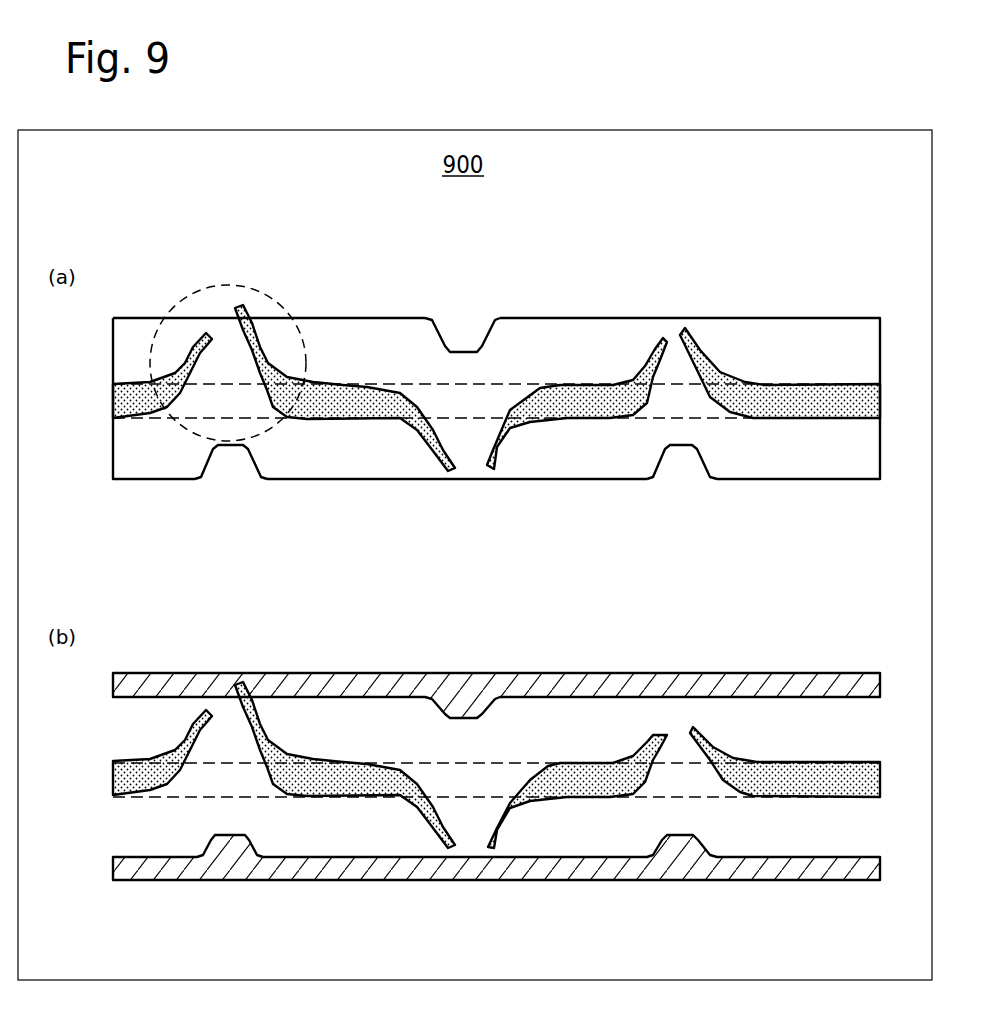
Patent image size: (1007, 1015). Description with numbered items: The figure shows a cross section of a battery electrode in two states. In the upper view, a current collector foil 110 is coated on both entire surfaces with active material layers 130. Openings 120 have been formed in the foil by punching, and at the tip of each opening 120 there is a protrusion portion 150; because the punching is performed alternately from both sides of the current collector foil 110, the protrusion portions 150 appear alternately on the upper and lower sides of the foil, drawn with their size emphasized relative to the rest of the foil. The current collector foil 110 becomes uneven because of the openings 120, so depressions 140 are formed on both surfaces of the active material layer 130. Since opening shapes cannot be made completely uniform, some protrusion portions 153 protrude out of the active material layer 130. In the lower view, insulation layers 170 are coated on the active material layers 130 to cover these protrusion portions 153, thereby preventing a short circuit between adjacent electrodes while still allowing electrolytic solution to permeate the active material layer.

The current collector foil 110 is at (355, 385).
The opening 120 is at (150, 358).
The active material layer 130 is at (785, 330).
The depression 140 is at (473, 330).
The protrusion portion 150 is at (195, 343).
The protrusion portion protruding from the active material layer 153 is at (248, 310).
The insulation layer 170 is at (617, 682).